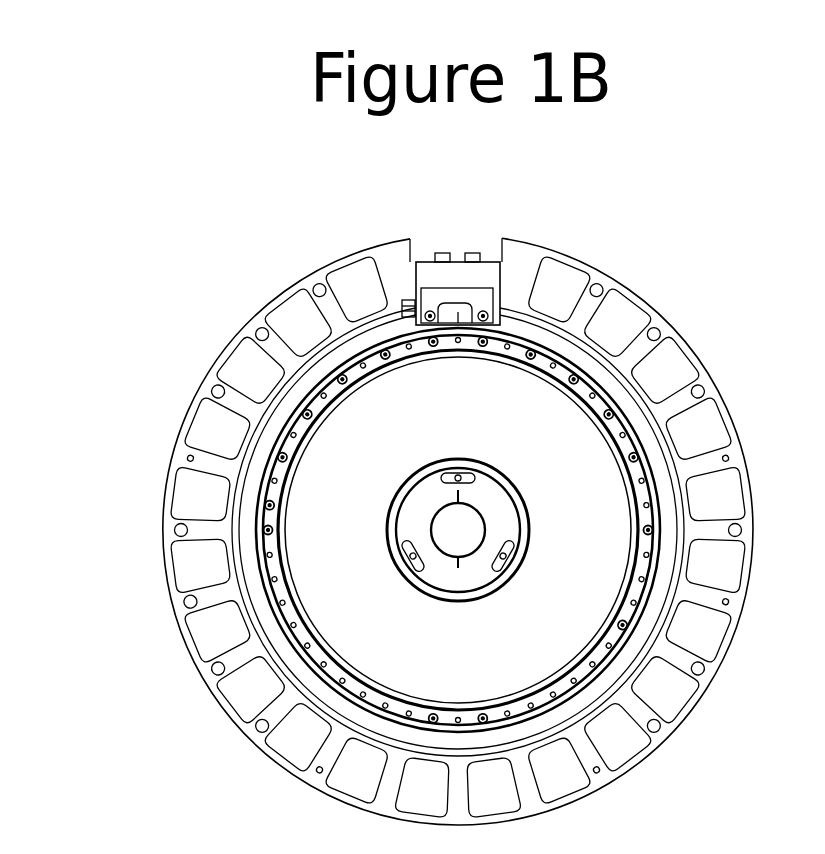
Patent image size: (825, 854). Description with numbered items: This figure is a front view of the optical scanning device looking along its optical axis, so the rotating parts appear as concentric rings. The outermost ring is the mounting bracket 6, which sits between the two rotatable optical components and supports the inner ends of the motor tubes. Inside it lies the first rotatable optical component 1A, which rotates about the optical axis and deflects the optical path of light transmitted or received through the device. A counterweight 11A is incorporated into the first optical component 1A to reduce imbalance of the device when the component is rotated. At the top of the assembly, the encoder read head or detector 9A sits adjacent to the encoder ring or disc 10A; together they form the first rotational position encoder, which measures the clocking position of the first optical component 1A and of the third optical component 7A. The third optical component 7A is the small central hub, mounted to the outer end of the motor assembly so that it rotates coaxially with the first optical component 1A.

The first rotatable optical component 1A is at (538, 448).
The mounting bracket 6 is at (305, 325).
The third optical component 7A is at (462, 538).
The encoder read head or detector 9A is at (455, 292).
The encoder ring or disc 10A is at (562, 348).
The counterweight 11A is at (327, 383).